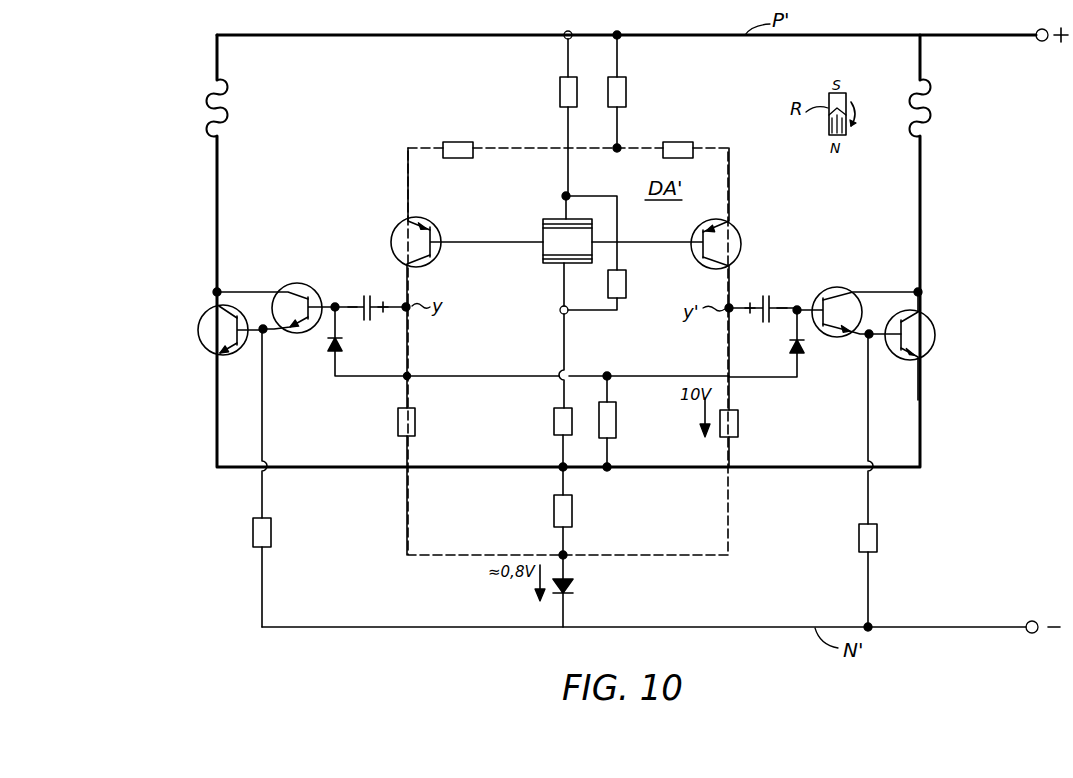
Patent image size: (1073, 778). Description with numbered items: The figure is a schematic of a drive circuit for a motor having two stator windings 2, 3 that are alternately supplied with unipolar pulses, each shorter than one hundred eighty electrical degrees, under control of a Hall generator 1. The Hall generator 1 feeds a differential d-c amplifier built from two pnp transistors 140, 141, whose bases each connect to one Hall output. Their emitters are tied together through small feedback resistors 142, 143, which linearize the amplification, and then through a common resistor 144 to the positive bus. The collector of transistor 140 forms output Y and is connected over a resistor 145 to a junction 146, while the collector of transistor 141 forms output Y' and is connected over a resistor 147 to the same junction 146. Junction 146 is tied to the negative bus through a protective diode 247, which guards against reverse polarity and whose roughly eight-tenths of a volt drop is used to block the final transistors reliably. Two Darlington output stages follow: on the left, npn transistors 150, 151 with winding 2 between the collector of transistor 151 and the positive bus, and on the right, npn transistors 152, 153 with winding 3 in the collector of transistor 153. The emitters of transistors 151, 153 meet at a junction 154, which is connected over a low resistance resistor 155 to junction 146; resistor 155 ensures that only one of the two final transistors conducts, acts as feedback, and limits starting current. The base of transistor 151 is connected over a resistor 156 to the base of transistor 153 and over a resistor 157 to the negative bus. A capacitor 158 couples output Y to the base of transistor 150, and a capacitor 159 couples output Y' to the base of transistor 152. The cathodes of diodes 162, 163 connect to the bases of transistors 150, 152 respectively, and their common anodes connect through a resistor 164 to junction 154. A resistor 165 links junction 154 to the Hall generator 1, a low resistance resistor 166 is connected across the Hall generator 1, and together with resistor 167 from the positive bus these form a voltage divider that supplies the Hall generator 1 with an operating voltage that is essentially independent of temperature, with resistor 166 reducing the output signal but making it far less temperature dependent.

The Hall generator 1 is at (545, 220).
The motor winding 2 is at (228, 100).
The motor winding 3 is at (930, 97).
The pnp transistor 140 is at (393, 230).
The pnp transistor 141 is at (740, 224).
The resistor 142 is at (456, 144).
The resistor 143 is at (680, 143).
The common resistor 144 is at (627, 95).
The resistor 145 is at (415, 426).
The junction 146 is at (568, 553).
The resistor 147 is at (739, 422).
The npn transistor 150 is at (303, 285).
The npn transistor 151 is at (200, 325).
The npn transistor 152 is at (835, 290).
The npn transistor 153 is at (936, 324).
The junction 154 is at (561, 467).
The low resistance resistor 155 is at (572, 511).
The resistor 156 is at (272, 538).
The resistor 157 is at (878, 538).
The capacitor 158 is at (369, 296).
The capacitor 159 is at (768, 296).
The diode 162 is at (332, 345).
The diode 163 is at (808, 346).
The resistor 164 is at (616, 423).
The resistor 165 is at (554, 427).
The low resistance resistor 166 is at (627, 287).
The resistor 167 is at (560, 93).
The protective diode 247 is at (574, 587).